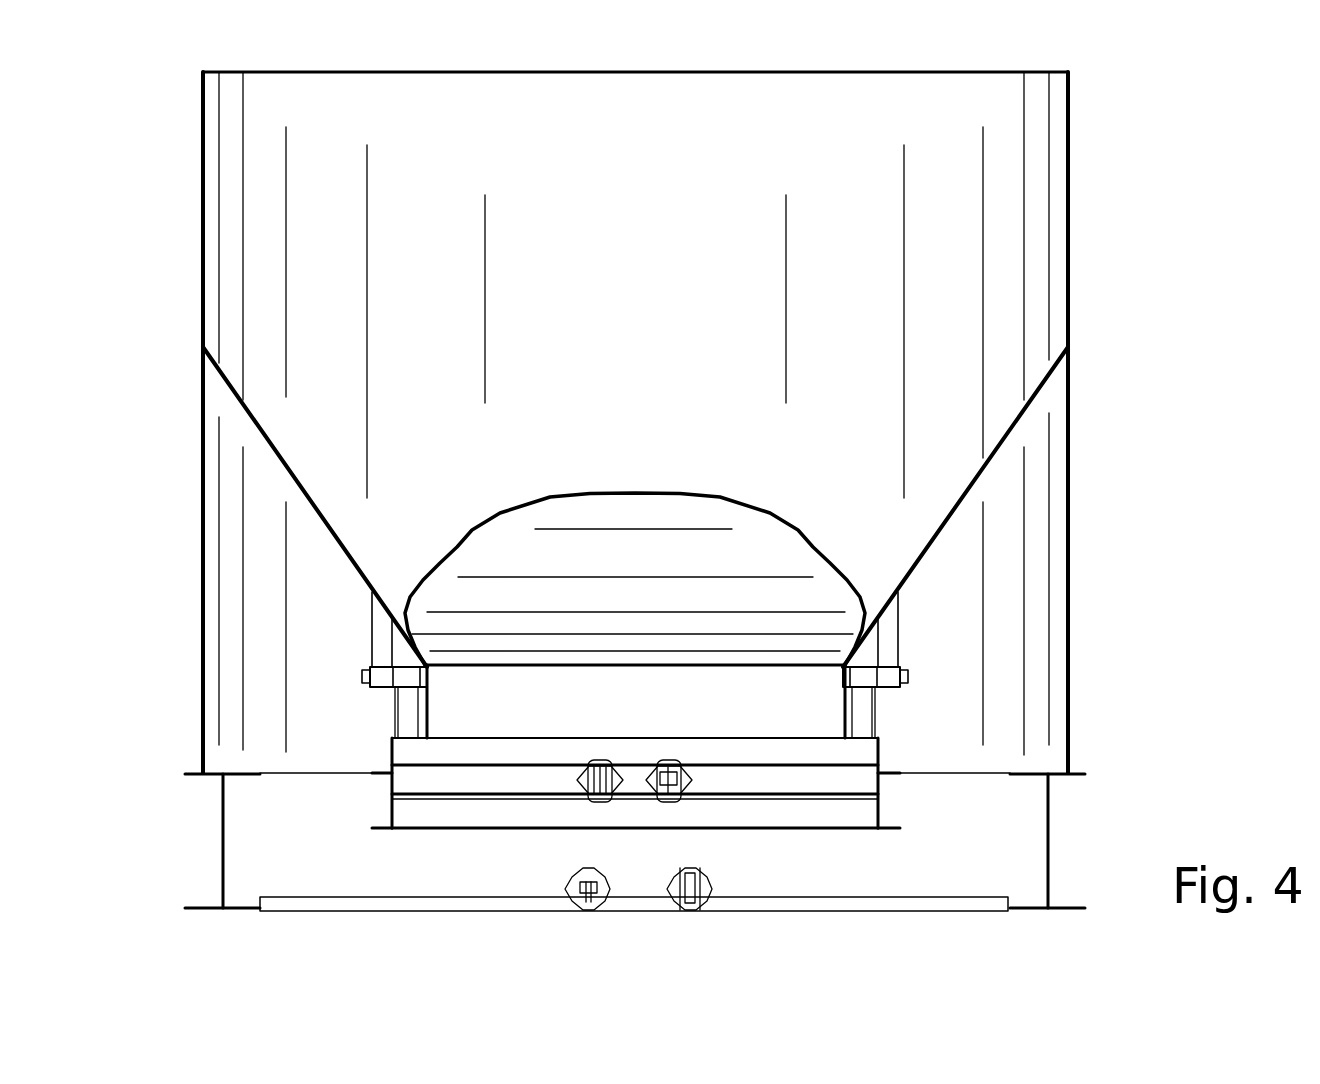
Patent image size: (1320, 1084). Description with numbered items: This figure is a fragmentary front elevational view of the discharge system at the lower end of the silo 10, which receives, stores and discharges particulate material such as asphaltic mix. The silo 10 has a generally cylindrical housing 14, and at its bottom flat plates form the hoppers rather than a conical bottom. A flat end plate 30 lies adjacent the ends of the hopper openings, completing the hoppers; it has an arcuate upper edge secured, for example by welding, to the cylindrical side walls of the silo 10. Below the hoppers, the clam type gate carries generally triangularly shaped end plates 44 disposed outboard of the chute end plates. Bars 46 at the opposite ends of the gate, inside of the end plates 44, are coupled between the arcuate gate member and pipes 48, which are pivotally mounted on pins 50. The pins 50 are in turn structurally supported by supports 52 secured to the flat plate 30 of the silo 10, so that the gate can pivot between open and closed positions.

The silo 10 is at (1108, 168).
The cylindrical housing 14 is at (203, 193).
The flat end plate 30 is at (247, 412).
The end plate 44 is at (397, 720).
The bar 46 is at (405, 705).
The pipe 48 is at (863, 672).
The pin 50 is at (905, 678).
The support 52 is at (377, 628).